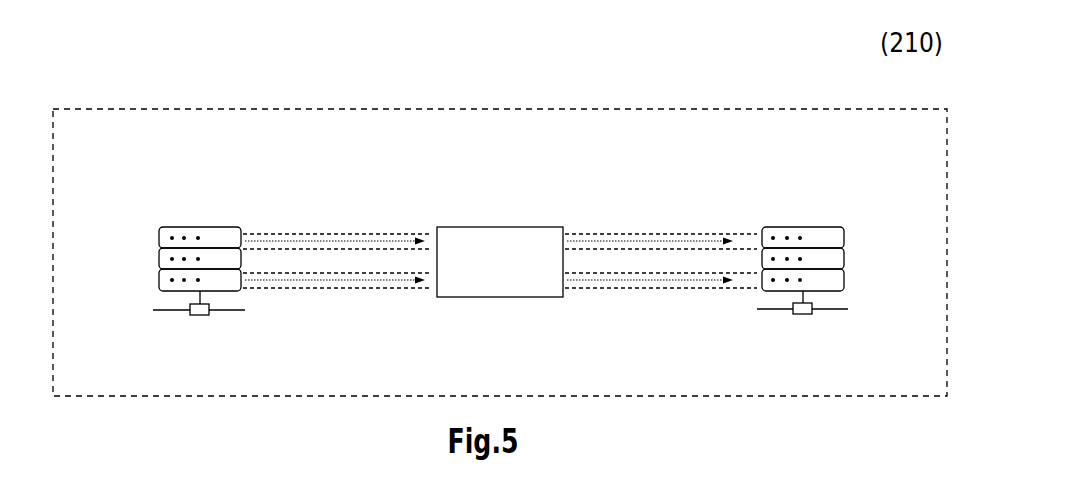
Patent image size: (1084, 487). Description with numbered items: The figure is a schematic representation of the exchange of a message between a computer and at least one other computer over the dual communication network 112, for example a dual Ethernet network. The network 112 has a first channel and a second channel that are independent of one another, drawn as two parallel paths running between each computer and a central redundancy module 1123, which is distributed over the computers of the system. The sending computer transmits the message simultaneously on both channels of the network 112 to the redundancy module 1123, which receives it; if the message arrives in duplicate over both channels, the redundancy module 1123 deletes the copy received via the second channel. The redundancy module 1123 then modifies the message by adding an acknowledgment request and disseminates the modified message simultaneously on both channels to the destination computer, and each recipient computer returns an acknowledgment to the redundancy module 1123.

The dual communication network 112 is at (214, 101).
The redundancy module 1123 is at (500, 262).